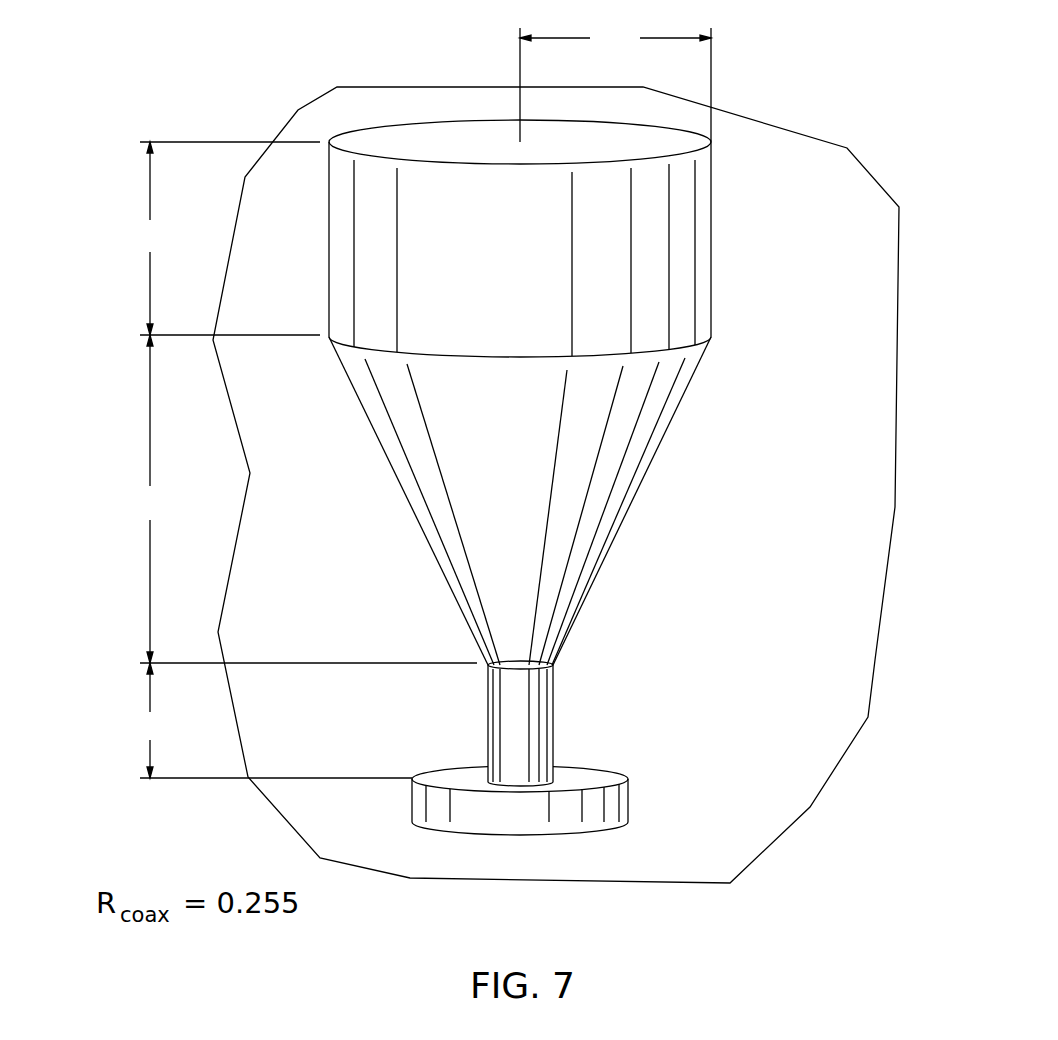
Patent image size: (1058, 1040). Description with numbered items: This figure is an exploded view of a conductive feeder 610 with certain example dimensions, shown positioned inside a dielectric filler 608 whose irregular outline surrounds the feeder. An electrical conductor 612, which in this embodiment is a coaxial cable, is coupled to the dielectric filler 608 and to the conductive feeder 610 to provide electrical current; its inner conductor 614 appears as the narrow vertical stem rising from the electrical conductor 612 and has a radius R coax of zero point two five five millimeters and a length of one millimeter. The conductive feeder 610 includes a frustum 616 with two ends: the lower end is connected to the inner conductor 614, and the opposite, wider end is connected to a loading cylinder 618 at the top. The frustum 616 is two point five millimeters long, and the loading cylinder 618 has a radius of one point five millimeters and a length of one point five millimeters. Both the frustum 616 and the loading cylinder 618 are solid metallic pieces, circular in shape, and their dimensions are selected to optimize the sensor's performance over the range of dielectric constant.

The dielectric filler 608 is at (779, 552).
The conductive feeder 610 is at (258, 99).
The electrical conductor 612 is at (627, 803).
The inner conductor 614 is at (555, 703).
The frustum 616 is at (403, 495).
The loading cylinder 618 is at (713, 233).